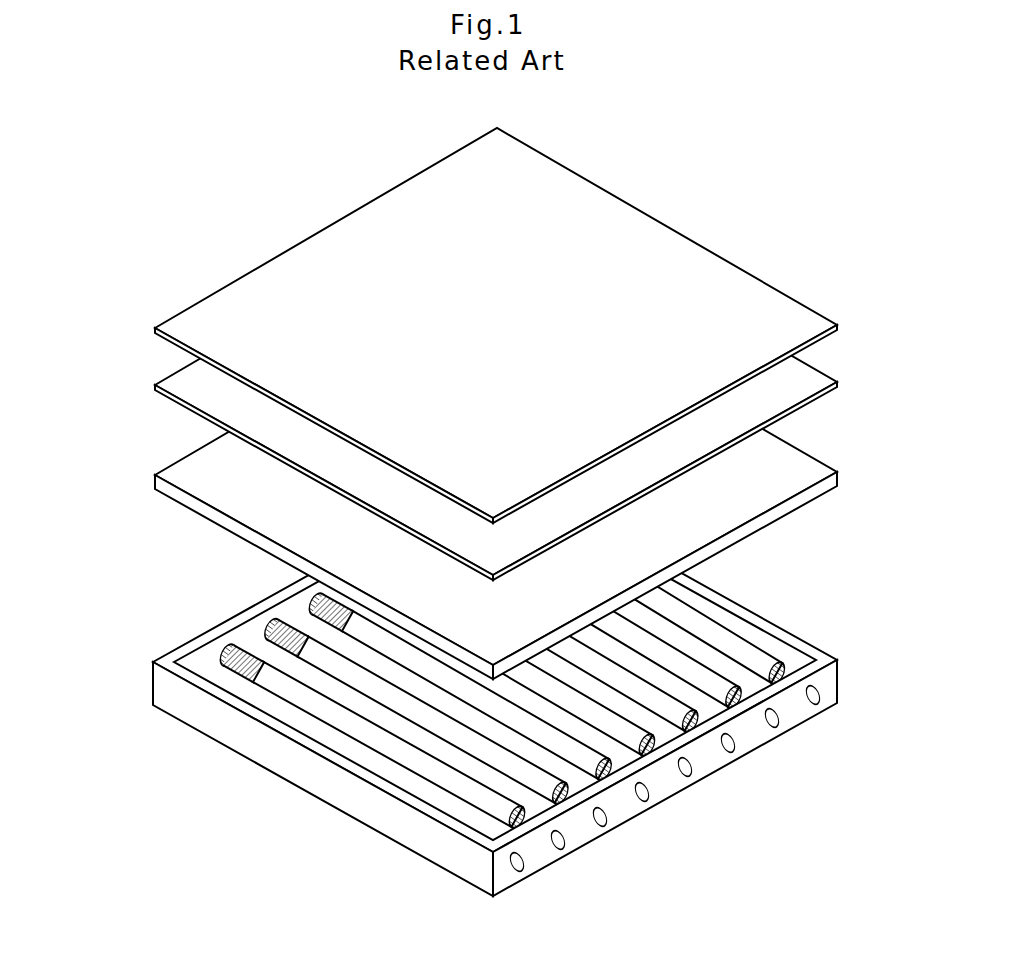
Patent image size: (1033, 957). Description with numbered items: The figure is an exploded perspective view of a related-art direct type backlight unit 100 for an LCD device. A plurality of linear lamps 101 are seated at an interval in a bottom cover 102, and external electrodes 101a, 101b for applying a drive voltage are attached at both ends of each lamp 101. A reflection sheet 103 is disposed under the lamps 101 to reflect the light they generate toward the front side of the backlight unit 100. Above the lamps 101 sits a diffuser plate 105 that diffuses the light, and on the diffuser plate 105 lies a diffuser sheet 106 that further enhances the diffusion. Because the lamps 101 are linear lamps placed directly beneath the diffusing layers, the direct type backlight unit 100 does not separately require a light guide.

The direct type backlight unit 100 is at (136, 262).
The lamps 101 is at (466, 663).
The external electrode 101a is at (240, 648).
The external electrode 101b is at (653, 740).
The bottom cover 102 is at (448, 856).
The reflection sheet 103 is at (447, 752).
The diffuser plate 105 is at (807, 472).
The diffuser sheet 106 is at (838, 326).